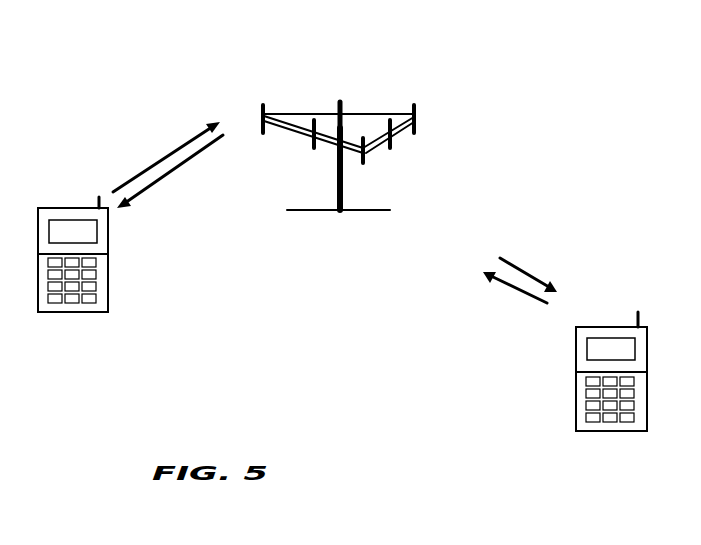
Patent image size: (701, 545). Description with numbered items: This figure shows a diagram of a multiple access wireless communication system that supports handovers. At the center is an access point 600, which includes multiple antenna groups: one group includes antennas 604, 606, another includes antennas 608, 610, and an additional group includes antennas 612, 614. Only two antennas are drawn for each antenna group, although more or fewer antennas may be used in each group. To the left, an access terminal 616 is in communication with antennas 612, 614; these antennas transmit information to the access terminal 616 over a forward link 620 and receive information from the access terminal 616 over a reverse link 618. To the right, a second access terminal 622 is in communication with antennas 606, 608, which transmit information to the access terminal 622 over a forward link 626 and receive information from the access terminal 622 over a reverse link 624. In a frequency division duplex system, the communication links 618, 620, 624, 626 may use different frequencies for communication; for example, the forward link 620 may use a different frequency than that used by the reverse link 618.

The access point 600 is at (341, 213).
The antenna 604 is at (367, 163).
The antenna 606 is at (393, 145).
The antenna 608 is at (418, 127).
The antenna 610 is at (340, 102).
The antenna 612 is at (267, 110).
The antenna 614 is at (313, 148).
The access terminal 616 is at (87, 208).
The reverse link 618 is at (165, 158).
The forward link 620 is at (177, 167).
The access terminal 622 is at (597, 325).
The reverse link 624 is at (505, 280).
The forward link 626 is at (528, 273).